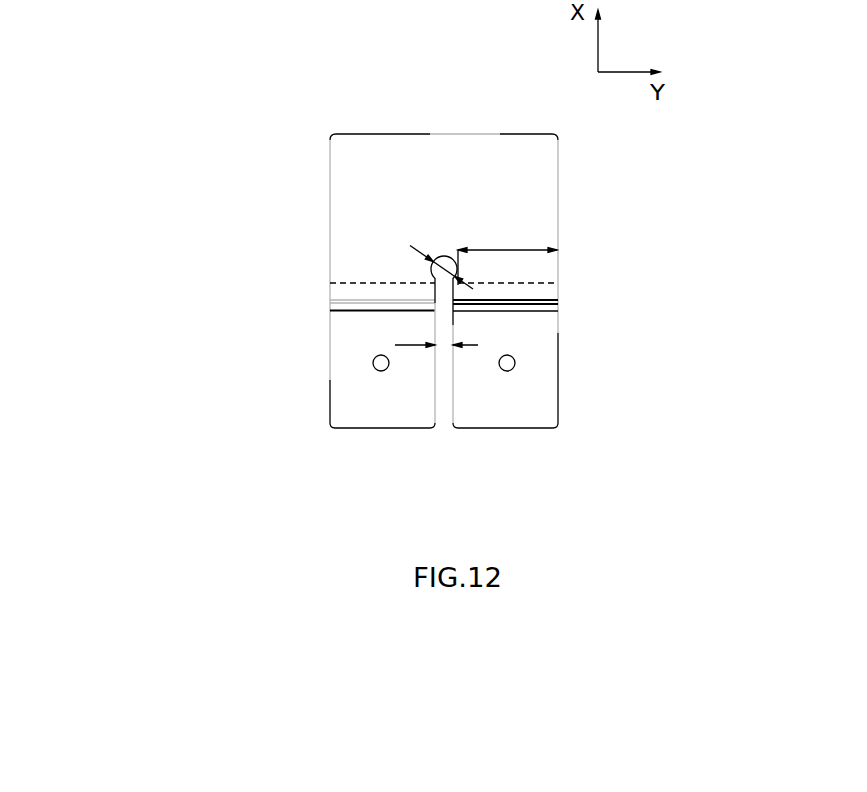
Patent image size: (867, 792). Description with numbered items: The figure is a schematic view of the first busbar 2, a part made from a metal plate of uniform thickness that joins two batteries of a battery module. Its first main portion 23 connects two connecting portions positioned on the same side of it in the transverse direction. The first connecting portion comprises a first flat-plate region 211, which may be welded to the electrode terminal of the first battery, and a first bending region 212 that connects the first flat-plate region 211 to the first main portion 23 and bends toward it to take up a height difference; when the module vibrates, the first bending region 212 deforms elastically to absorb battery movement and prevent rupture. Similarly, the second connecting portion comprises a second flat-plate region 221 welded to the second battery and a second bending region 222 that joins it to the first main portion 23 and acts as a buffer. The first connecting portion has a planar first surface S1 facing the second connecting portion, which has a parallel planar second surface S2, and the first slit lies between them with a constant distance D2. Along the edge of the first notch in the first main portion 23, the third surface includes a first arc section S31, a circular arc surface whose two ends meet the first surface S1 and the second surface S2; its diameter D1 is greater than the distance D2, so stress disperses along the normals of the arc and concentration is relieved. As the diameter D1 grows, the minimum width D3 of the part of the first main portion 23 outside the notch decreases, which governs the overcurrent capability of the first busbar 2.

The first busbar 2 is at (155, 147).
The first main portion 23 is at (420, 160).
The first arc section S31 is at (448, 257).
The diameter of the circular arc surface D1 is at (426, 262).
The minimum width D3 is at (507, 239).
The distance between the first surface and the second surface D2 is at (436, 335).
The second flat-plate region 221 is at (345, 370).
The second bending region 222 is at (354, 305).
The first flat-plate region 211 is at (547, 366).
The first bending region 212 is at (558, 305).
The second surface S2 is at (435, 403).
The first surface S1 is at (453, 403).